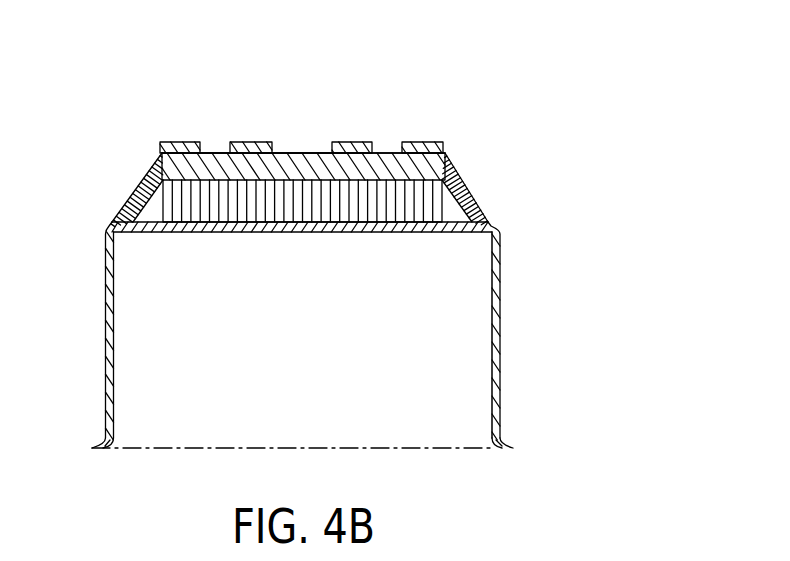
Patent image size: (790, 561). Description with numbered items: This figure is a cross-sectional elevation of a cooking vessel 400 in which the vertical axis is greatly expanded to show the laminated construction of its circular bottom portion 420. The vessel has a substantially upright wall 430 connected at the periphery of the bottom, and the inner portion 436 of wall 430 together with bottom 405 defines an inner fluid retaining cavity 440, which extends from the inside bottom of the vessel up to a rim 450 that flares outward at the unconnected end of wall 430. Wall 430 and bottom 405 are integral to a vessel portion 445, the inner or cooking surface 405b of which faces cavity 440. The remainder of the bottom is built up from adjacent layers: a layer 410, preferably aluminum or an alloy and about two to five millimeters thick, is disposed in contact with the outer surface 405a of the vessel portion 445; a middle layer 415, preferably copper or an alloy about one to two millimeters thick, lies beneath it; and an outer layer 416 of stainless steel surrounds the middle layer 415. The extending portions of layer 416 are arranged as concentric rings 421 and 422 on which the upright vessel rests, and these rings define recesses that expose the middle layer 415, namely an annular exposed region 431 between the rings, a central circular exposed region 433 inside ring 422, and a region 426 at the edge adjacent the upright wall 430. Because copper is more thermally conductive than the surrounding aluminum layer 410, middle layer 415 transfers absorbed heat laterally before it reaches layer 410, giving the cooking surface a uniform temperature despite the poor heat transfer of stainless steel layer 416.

The cooking vessel 400 is at (123, 148).
The bottom portion 420 is at (288, 90).
The annular exposed region 431 is at (213, 150).
The extending ring 422 is at (256, 146).
The central circular exposed region 433 is at (300, 150).
The extending ring 421 is at (422, 142).
The outer layer 416 is at (445, 148).
The middle layer 415 is at (438, 170).
The layer 410 is at (440, 205).
The region 426 is at (135, 187).
The bottom 405 is at (498, 228).
The outer surface 405a is at (167, 220).
The inner or cooking surface 405b is at (375, 232).
The upright wall 430 is at (105, 332).
The vessel portion 445 is at (523, 335).
The inner portion 436 is at (113, 422).
The inner fluid retaining cavity 440 is at (318, 360).
The rim 450 is at (478, 450).